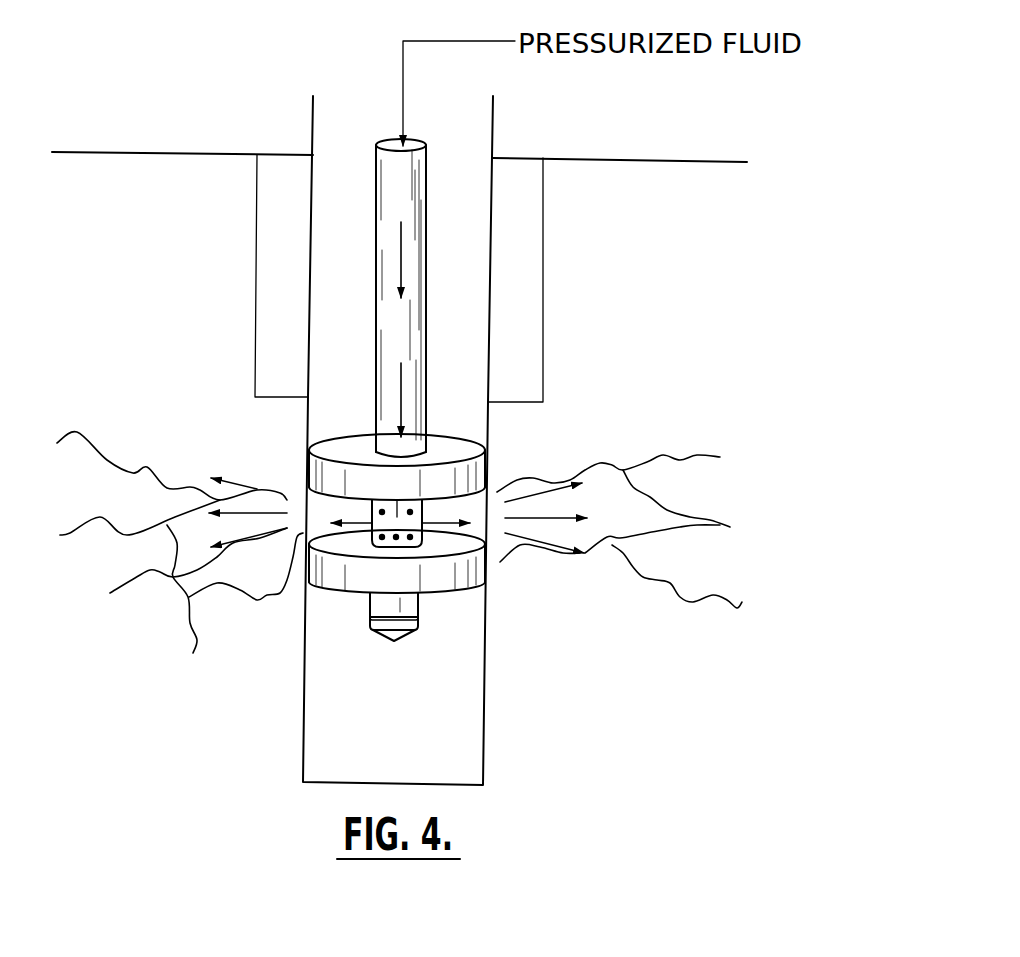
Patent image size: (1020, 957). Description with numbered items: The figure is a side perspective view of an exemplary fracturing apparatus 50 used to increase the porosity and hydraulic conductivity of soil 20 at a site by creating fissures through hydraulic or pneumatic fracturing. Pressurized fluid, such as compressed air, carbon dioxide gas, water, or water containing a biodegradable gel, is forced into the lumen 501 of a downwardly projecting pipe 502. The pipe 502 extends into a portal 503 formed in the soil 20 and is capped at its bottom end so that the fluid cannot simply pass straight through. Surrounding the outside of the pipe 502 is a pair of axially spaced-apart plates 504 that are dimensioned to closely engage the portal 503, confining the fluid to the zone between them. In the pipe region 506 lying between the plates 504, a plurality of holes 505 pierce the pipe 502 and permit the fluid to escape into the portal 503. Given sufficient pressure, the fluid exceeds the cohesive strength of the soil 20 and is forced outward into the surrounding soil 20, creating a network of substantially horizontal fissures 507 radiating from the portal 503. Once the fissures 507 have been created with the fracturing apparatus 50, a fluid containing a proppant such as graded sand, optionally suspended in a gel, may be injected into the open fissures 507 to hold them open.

The soil 20 is at (683, 375).
The fracturing apparatus 50 is at (175, 544).
The lumen 501 is at (444, 263).
The pipe 502 is at (506, 329).
The portal 503 is at (379, 426).
The plates 504 is at (440, 518).
The holes 505 is at (463, 598).
The pipe region 506 is at (335, 487).
The fissures 507 is at (638, 531).